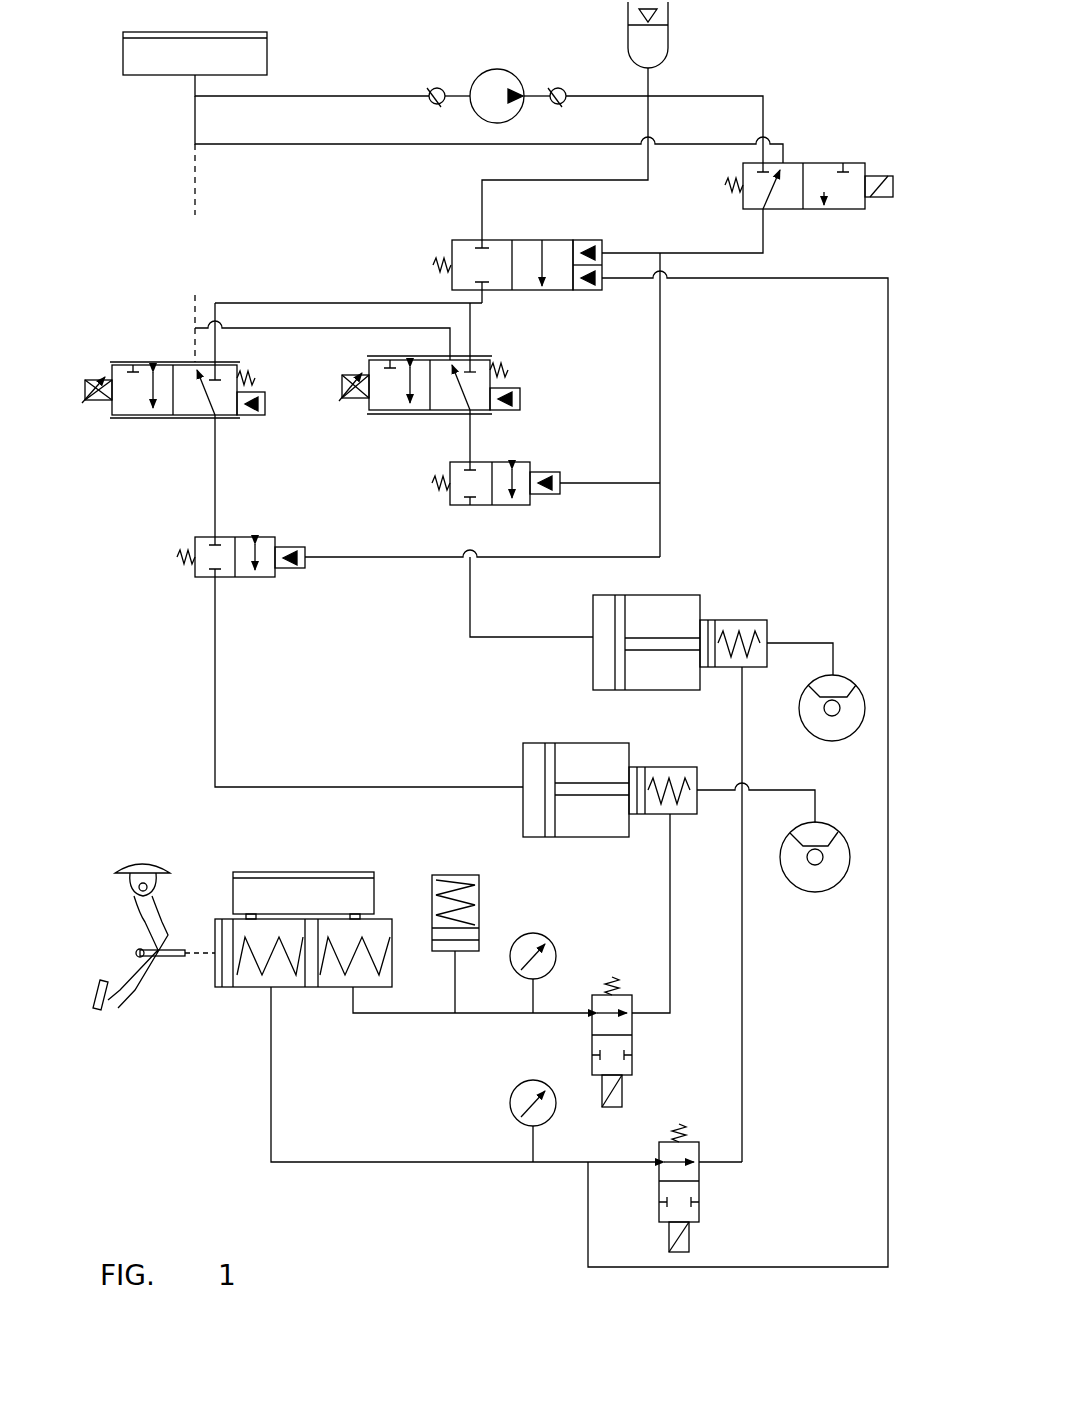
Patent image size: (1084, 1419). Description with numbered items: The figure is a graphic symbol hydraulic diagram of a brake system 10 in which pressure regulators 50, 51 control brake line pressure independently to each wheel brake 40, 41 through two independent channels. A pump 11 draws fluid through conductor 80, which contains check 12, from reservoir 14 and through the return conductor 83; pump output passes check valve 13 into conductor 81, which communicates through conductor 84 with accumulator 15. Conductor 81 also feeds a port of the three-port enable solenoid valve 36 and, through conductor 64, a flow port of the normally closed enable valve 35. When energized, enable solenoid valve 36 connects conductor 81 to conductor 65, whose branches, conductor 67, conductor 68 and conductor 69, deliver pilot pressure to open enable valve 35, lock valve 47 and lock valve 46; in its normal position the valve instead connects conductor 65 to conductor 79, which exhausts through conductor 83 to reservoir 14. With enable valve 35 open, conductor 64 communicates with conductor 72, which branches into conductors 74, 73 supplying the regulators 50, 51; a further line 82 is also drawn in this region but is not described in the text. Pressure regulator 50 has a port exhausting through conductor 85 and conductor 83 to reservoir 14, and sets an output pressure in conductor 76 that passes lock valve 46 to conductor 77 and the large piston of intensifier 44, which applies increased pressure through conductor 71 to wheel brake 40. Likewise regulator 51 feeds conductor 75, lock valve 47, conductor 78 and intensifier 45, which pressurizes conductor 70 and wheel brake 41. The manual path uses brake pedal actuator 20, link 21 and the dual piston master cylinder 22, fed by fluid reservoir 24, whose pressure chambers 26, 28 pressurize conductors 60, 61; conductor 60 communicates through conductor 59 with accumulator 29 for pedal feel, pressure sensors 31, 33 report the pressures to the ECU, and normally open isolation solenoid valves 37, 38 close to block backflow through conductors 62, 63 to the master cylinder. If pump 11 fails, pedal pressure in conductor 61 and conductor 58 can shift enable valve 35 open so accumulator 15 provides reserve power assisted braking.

The brake system 10 is at (192, 684).
The pump 11 is at (492, 82).
The check 12 is at (433, 88).
The check valve 13 is at (555, 88).
The reservoir 14 is at (258, 57).
The accumulator 15 is at (661, 38).
The brake pedal actuator 20 is at (96, 1012).
The link 21 is at (200, 955).
The master cylinder 22 is at (390, 916).
The fluid reservoir 24 is at (330, 872).
The pressure chamber 26 is at (255, 987).
The pressure chamber 28 is at (335, 987).
The accumulator 29 is at (478, 895).
The pressure sensor 31 is at (532, 933).
The pressure sensor 33 is at (515, 1097).
The enable valve 35 is at (560, 290).
The enable solenoid valve 36 is at (832, 158).
The isolation solenoid valve 37 is at (636, 1062).
The isolation solenoid valve 38 is at (700, 1192).
The wheel brake 40 is at (822, 830).
The wheel brake 41 is at (845, 687).
The intensifier 44 is at (600, 742).
The intensifier 45 is at (675, 593).
The lock valve 46 is at (270, 537).
The lock valve 47 is at (542, 462).
The pressure regulator 50 is at (160, 420).
The pressure regulator 51 is at (384, 418).
The conductor 58 is at (886, 1092).
The conductor 59 is at (453, 978).
The conductor 60 is at (473, 1016).
The conductor 61 is at (438, 1163).
The conductor 62 is at (672, 930).
The conductor 63 is at (744, 1010).
The conductor 64 is at (481, 180).
The conductor 65 is at (661, 356).
The conductor 67 is at (716, 245).
The conductor 68 is at (597, 483).
The conductor 69 is at (548, 557).
The conductor 70 is at (796, 642).
The conductor 71 is at (778, 790).
The conductor 72 is at (486, 303).
The conductor 73 is at (473, 330).
The conductor 74 is at (330, 328).
The conductor 75 is at (468, 440).
The conductor 76 is at (217, 478).
The conductor 77 is at (217, 640).
The conductor 78 is at (550, 640).
The conductor 79 is at (348, 146).
The conductor 80 is at (310, 96).
The conductor 81 is at (598, 96).
The conduit 82 is at (373, 303).
The conductor 83 is at (192, 215).
The conductor 84 is at (652, 82).
The conductor 85 is at (193, 340).